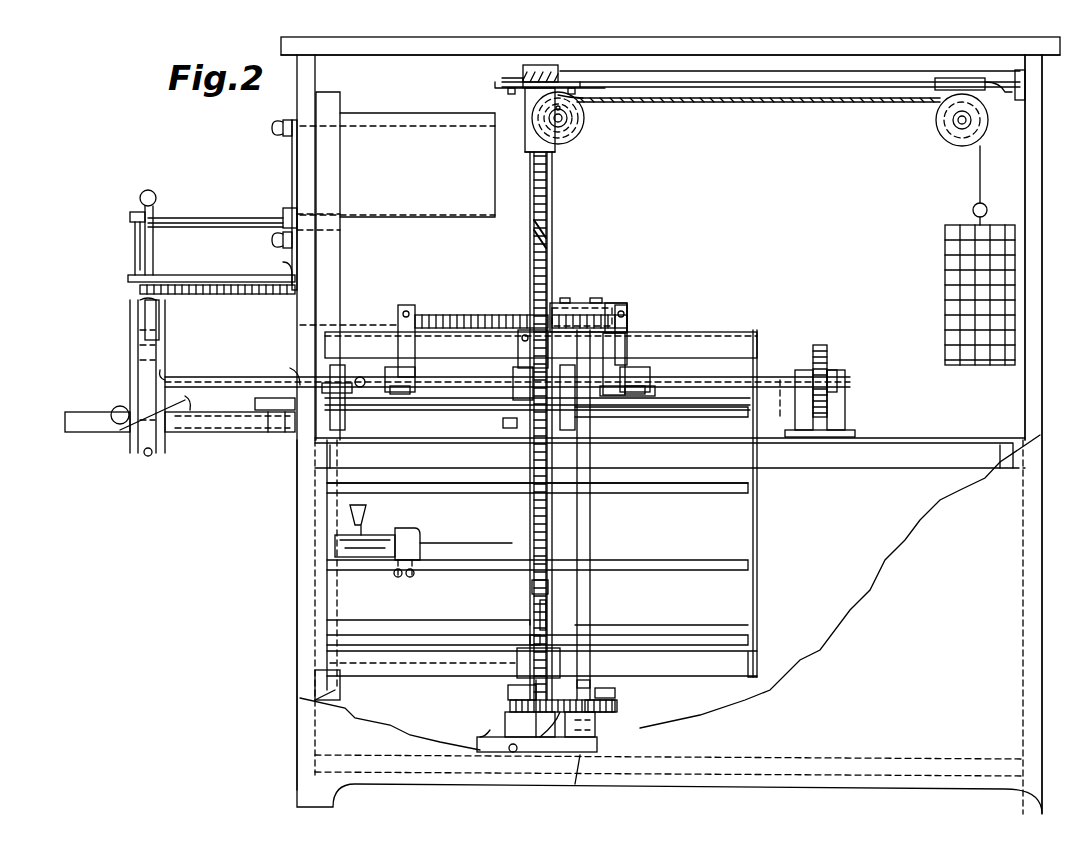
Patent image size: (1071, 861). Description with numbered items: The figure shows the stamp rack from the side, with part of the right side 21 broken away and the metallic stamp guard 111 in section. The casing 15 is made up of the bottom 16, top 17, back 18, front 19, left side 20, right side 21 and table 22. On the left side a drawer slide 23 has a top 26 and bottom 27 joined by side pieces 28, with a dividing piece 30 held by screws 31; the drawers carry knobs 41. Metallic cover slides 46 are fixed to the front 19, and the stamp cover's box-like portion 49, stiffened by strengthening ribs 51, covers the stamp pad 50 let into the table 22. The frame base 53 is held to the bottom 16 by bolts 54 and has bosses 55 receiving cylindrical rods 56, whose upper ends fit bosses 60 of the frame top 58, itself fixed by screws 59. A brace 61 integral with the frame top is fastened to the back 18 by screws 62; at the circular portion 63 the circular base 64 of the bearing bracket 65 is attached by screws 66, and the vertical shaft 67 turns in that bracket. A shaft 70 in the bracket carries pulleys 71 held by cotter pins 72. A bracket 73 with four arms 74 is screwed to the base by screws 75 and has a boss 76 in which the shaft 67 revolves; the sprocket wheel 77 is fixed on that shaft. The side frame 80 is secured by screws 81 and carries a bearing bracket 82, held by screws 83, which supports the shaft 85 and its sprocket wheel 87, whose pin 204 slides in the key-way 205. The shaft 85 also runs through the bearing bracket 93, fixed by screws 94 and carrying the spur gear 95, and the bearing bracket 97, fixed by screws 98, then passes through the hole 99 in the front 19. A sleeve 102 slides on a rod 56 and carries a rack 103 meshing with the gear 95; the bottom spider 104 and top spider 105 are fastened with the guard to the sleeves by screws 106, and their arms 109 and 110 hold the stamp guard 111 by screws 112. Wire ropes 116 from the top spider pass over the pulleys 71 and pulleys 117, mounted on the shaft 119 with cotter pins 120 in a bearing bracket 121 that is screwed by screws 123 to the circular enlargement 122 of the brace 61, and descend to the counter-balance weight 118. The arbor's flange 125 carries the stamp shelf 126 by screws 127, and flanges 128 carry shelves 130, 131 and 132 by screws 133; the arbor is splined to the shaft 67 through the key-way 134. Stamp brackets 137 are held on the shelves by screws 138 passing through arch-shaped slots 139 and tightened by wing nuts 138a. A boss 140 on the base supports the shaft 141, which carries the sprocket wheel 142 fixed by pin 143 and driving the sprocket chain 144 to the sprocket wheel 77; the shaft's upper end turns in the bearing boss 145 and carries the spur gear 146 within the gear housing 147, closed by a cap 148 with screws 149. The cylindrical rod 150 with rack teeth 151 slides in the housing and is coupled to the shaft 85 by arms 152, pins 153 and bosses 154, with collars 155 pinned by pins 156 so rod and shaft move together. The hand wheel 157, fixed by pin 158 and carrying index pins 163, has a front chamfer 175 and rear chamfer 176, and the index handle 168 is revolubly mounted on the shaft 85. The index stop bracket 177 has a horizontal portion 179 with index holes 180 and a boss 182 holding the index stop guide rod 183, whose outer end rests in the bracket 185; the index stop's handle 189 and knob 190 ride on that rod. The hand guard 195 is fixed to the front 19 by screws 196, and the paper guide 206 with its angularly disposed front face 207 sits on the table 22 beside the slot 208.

The casing 15 is at (297, 800).
The bottom 16 is at (582, 788).
The top 17 is at (281, 40).
The back 18 is at (1032, 177).
The front 19 is at (297, 548).
The left side 20 is at (840, 581).
The right side 21 is at (621, 701).
The table 22 is at (75, 420).
The drawer slide 23 is at (417, 165).
The top of drawer slide 26 is at (422, 113).
The bottom of drawer slide 27 is at (355, 322).
The side pieces 28 is at (364, 266).
The dividing piece 30 is at (530, 200).
The screws 31 is at (355, 215).
The knobs 41 is at (272, 128).
The metallic cover slides 46 is at (292, 172).
The box-like portion 49 is at (255, 405).
The stamp pad 50 is at (285, 432).
The strengthening ribs 51 is at (268, 432).
The frame base 53 is at (555, 760).
The bolts 54 is at (510, 752).
The bosses 55 is at (505, 722).
The cylindrical rods 56 is at (552, 243).
The frame top 58 is at (540, 65).
The screws 59 is at (523, 70).
The bosses 60 is at (525, 118).
The brace 61 is at (880, 80).
The screws 62 is at (1018, 98).
The circular portion 63 is at (578, 82).
The circular base 64 is at (520, 92).
The bearing bracket 65 is at (525, 150).
The screws 66 is at (510, 95).
The vertical shaft 67 is at (552, 165).
The shaft 70 is at (584, 118).
The pulleys 71 is at (567, 122).
The cotter pins 72 is at (561, 109).
The bracket 73 is at (508, 690).
The arms 74 is at (510, 708).
The screws 75 is at (485, 733).
The boss 76 is at (575, 692).
The sprocket wheel 77 is at (520, 705).
The side frame 80 is at (670, 453).
The screws 81 is at (335, 455).
The bearing brackets 82 is at (845, 405).
The screws 83 is at (855, 432).
The shaft 85 is at (218, 377).
The sprocket wheel 87 is at (828, 350).
The bearing bracket 93 is at (513, 398).
The screws 94 is at (503, 424).
The spur gear 95 is at (365, 387).
The bearing bracket 97 is at (345, 382).
The screws 98 is at (360, 412).
The hole 99 is at (290, 370).
The sleeve 102 is at (548, 592).
The rack 103 is at (532, 590).
The bottom spider 104 is at (515, 666).
The top spider 105 is at (520, 345).
The screws 106 is at (520, 352).
The arm 109 is at (542, 662).
The arm 110 is at (541, 345).
The metallic stamp guard 111 is at (338, 592).
The screws 112 is at (760, 350).
The wire ropes 116 is at (782, 102).
The pulleys 117 is at (952, 144).
The counter-balance weight 118 is at (945, 280).
The shaft 119 is at (950, 130).
The cotter pins 120 is at (953, 120).
The bearing bracket 121 is at (1005, 85).
The circular enlargement 122 is at (966, 80).
The screws 123 is at (900, 100).
The flange 125 is at (500, 638).
The stamp shelf 126 is at (668, 636).
The screws 127 is at (530, 630).
The flanges 128 is at (592, 455).
The shelf 130 is at (722, 562).
The shelf 131 is at (730, 490).
The shelf 132 is at (690, 413).
The screws 133 is at (512, 482).
The key-way 134 is at (548, 232).
The stamp brackets 137 is at (410, 532).
The screws 138 is at (415, 565).
The wing nuts 138a is at (393, 578).
The slots 139 is at (430, 560).
The boss 140 is at (595, 728).
The shaft 141 is at (592, 618).
The sprocket wheel 142 is at (617, 706).
The pin 143 is at (600, 688).
The sprocket chain 144 is at (545, 752).
The bearing boss 145 is at (610, 415).
The spur gear 146 is at (622, 305).
The gear housing 147 is at (625, 345).
The cap 148 is at (590, 303).
The screws 149 is at (556, 303).
The cylindrical rod 150 is at (482, 314).
The rack teeth 151 is at (440, 314).
The arms 152 is at (398, 308).
The pins 153 is at (406, 311).
The bosses 154 is at (414, 368).
The collars 155 is at (395, 367).
The pins 156 is at (392, 396).
The hand wheel 157 is at (130, 322).
The pin 158 is at (172, 372).
The index pin 163 is at (148, 456).
The index handle 168 is at (120, 406).
The front chamfer 175 is at (138, 301).
The rear chamfer 176 is at (160, 306).
The index stop bracket 177 is at (288, 280).
The horizontal portion 179 is at (215, 296).
The index holes 180 is at (222, 275).
The boss 182 is at (285, 212).
The index stop guide rod 183 is at (205, 218).
The bracket 185 is at (135, 250).
The handle 189 is at (130, 215).
The knob 190 is at (148, 190).
The hand guard 195 is at (340, 685).
The screws 196 is at (340, 698).
The pin 204 is at (838, 372).
The key-way 205 is at (780, 400).
The paper guide 206 is at (200, 398).
The angularly disposed front face 207 is at (120, 430).
The slot 208 is at (230, 420).